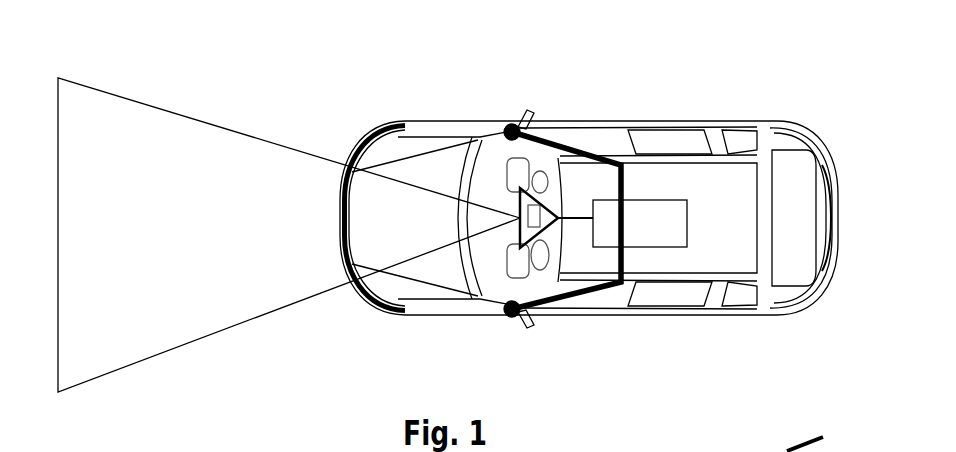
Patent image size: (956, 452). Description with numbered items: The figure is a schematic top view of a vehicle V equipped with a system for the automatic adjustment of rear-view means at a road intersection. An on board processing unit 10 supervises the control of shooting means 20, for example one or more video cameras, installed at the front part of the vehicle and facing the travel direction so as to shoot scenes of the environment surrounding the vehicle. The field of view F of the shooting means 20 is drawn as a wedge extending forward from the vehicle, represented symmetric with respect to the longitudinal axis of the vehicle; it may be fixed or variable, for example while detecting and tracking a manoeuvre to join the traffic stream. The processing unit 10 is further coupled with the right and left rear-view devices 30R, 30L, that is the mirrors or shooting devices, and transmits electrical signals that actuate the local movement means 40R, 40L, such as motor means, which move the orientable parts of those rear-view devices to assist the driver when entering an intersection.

The vehicle V is at (589, 162).
The field of view F is at (289, 221).
The on board processing unit 10 is at (653, 282).
The shooting means 20 is at (577, 273).
The right rear-view device 30R is at (577, 74).
The left rear-view device 30L is at (570, 365).
The right local movement means 40R is at (467, 80).
The left local movement means 40L is at (448, 344).